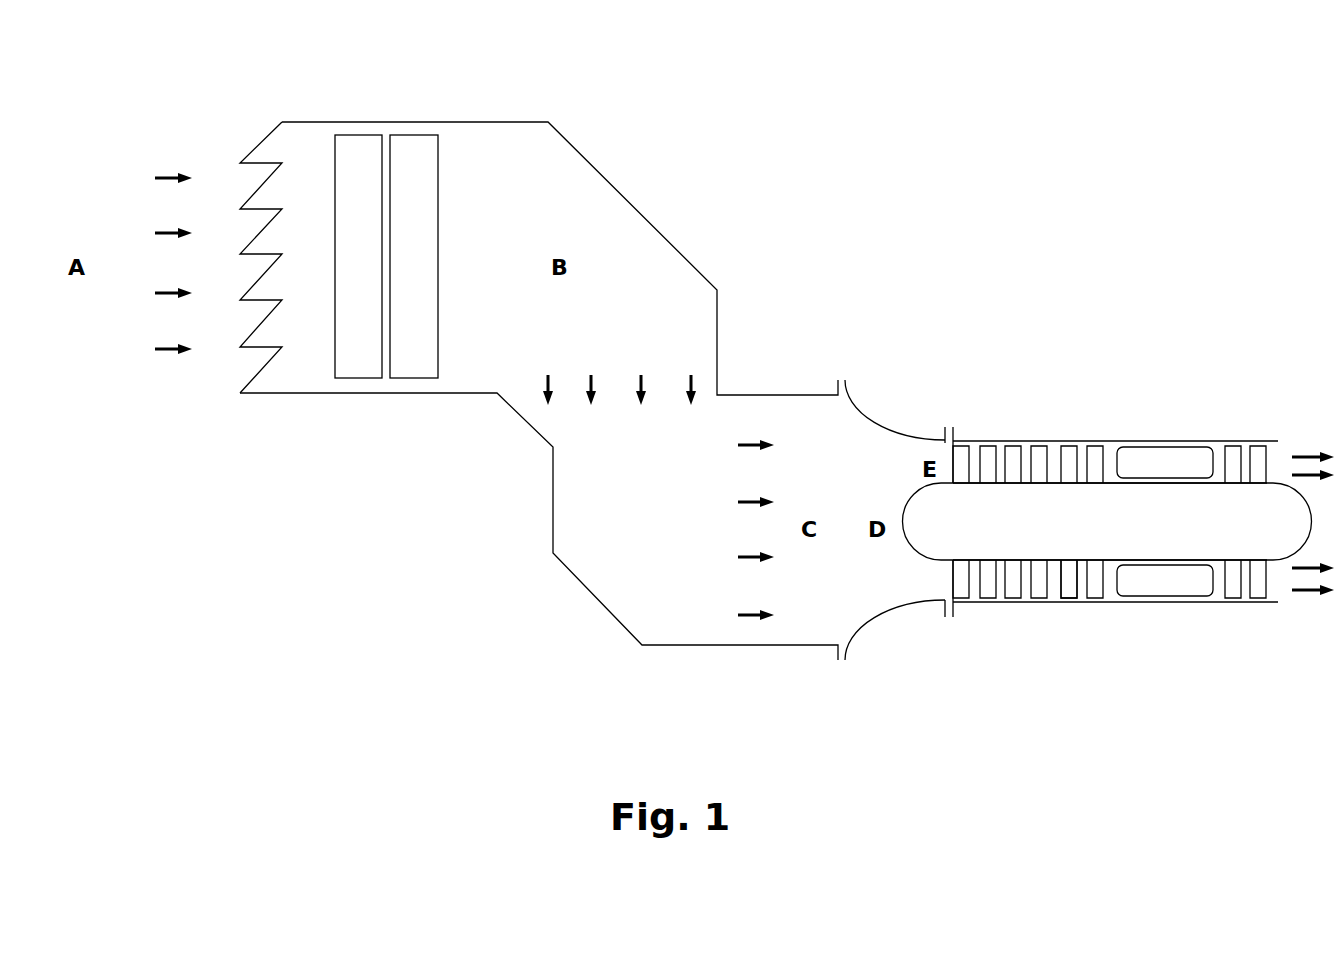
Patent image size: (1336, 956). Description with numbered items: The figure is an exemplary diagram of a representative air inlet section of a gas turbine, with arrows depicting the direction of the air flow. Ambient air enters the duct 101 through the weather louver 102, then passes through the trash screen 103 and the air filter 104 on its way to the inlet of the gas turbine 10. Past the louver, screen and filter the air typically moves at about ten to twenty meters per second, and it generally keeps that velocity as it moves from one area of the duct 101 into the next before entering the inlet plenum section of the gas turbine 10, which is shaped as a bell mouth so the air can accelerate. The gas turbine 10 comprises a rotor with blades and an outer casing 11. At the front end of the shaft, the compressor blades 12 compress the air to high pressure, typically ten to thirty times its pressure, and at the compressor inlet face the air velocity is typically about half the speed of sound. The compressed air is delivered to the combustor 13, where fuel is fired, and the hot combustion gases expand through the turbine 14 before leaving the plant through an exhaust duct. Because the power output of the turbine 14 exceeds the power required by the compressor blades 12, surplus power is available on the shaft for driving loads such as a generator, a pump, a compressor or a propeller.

The gas turbine 10 is at (1010, 543).
The outer casing 11 is at (1053, 438).
The compressor blades 12 is at (1070, 587).
The combustor 13 is at (1155, 452).
The turbine 14 is at (1232, 458).
The duct 101 is at (697, 263).
The weather louver 102 is at (278, 140).
The trash screen 103 is at (352, 155).
The air filter 104 is at (417, 150).